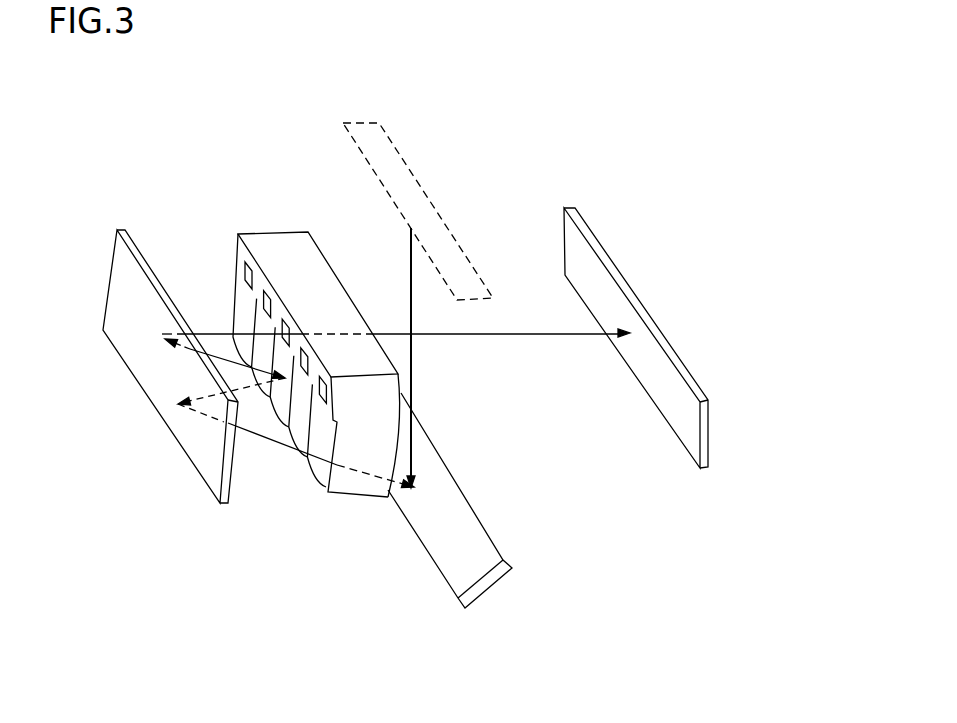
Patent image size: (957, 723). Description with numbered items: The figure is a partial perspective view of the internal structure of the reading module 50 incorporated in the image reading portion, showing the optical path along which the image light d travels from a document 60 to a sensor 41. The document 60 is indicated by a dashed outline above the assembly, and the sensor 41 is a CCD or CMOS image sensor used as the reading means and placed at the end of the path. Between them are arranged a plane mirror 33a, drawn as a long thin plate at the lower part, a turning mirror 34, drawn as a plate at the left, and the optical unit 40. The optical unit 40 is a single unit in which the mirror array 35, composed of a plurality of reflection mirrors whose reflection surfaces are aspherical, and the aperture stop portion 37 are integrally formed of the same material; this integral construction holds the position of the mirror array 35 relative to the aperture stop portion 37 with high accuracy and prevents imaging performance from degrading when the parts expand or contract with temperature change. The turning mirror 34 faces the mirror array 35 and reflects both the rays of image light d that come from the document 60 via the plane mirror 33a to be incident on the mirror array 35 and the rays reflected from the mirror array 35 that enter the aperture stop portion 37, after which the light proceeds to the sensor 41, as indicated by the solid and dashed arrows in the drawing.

The reading module 50 is at (585, 145).
The optical unit 40 is at (215, 168).
The mirror array 35 is at (236, 327).
The aperture stop portion 37 is at (238, 233).
The turning mirror 34 is at (135, 352).
The sensor 41 is at (690, 373).
The document 60 is at (418, 182).
The plane mirror 33a is at (489, 536).
The image light d is at (411, 272).